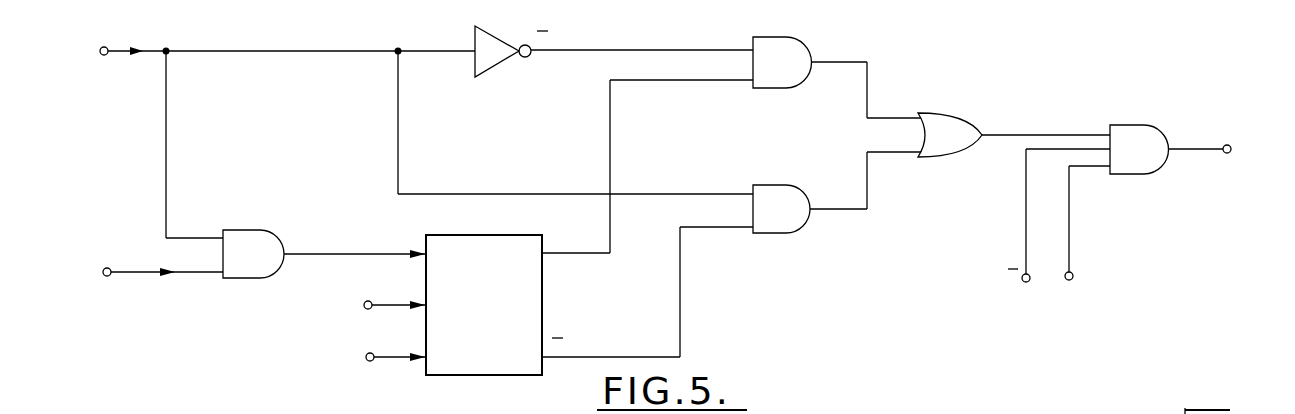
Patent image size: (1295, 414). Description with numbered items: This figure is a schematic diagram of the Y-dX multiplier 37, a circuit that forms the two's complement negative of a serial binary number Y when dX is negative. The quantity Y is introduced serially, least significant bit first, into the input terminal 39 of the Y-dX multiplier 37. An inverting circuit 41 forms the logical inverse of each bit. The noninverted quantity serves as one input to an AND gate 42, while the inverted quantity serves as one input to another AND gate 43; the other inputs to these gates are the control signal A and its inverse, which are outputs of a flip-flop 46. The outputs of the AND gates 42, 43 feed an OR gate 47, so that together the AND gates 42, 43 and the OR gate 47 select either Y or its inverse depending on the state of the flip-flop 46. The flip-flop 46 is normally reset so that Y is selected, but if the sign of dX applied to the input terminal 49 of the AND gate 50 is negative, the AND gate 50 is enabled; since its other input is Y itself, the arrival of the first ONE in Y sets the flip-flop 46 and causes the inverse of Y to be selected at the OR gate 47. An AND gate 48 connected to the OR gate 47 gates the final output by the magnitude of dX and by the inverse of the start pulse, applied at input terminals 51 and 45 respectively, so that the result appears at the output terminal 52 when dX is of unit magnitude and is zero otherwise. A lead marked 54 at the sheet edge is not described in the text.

The Y-dX multiplier 37 is at (100, 163).
The input terminal 39 is at (104, 56).
The inverting circuit 41 is at (500, 66).
The AND gate 42 is at (806, 226).
The AND gate 43 is at (808, 42).
The input terminal 45 is at (1026, 282).
The flip-flop 46 is at (542, 287).
The OR gate 47 is at (968, 112).
The AND gate 48 is at (1156, 124).
The input terminal 49 is at (107, 277).
The AND gate 50 is at (270, 229).
The input terminal 51 is at (1069, 280).
The output terminal 52 is at (1227, 153).
The lead line 54 is at (1230, 410).